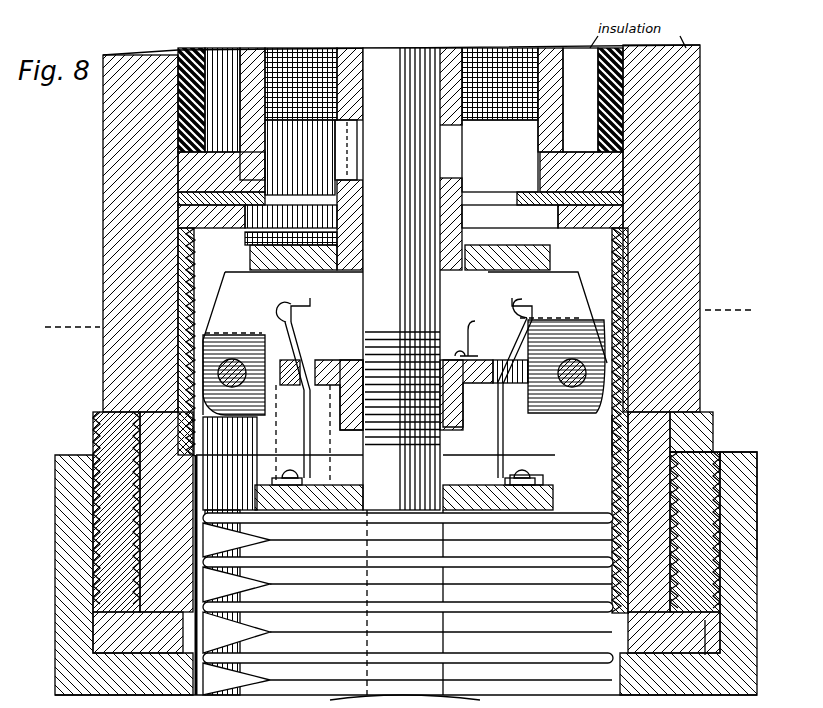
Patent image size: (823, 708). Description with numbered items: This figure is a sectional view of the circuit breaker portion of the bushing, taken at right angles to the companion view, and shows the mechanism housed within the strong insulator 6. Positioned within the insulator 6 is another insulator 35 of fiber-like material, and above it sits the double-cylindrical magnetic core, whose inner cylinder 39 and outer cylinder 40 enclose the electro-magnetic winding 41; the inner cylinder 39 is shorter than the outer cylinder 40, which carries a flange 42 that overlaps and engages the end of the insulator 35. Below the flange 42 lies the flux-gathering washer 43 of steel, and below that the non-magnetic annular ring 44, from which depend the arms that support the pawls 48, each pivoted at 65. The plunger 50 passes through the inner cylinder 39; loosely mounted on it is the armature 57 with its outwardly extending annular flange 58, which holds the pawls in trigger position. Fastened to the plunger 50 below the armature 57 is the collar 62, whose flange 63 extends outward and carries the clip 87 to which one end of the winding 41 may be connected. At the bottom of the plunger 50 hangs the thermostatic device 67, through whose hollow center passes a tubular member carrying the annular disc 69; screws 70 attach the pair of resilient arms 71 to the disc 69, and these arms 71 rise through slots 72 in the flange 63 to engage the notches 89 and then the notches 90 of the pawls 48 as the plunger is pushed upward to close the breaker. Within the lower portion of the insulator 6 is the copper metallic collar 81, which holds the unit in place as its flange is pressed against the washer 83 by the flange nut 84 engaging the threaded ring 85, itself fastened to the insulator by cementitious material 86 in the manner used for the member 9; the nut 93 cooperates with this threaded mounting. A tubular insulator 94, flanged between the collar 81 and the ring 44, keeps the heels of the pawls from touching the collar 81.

The insulator 6 is at (695, 122).
The member 9 is at (94, 323).
The insulator 35 is at (178, 113).
The inner cylinder 39 is at (455, 50).
The outer cylinder 40 is at (548, 50).
The electro-magnetic winding 41 is at (500, 50).
The flange 42 is at (185, 172).
The flux-gathering washer 43 is at (178, 200).
The annular ring 44 is at (178, 229).
The pawls 48 is at (298, 319).
The plunger 50 is at (420, 38).
The armature 57 is at (465, 190).
The annular flange 58 is at (240, 243).
The collar 62 is at (497, 458).
The flange 63 is at (479, 362).
The pivot 65 is at (234, 360).
The thermostatic device 67 is at (570, 672).
The annular disc 69 is at (553, 506).
The screws 70 is at (290, 470).
The arms 71 is at (305, 463).
The slots 72 is at (422, 380).
The metallic collar 81 is at (622, 460).
The washer 83 is at (700, 646).
The flange nut 84 is at (730, 456).
The threaded ring 85 is at (713, 426).
The cementitious material 86 is at (685, 515).
The clip 87 is at (472, 330).
The notches 89 is at (284, 304).
The notches 90 is at (302, 310).
The lock nut 93 is at (752, 462).
The tubular insulator 94 is at (612, 430).